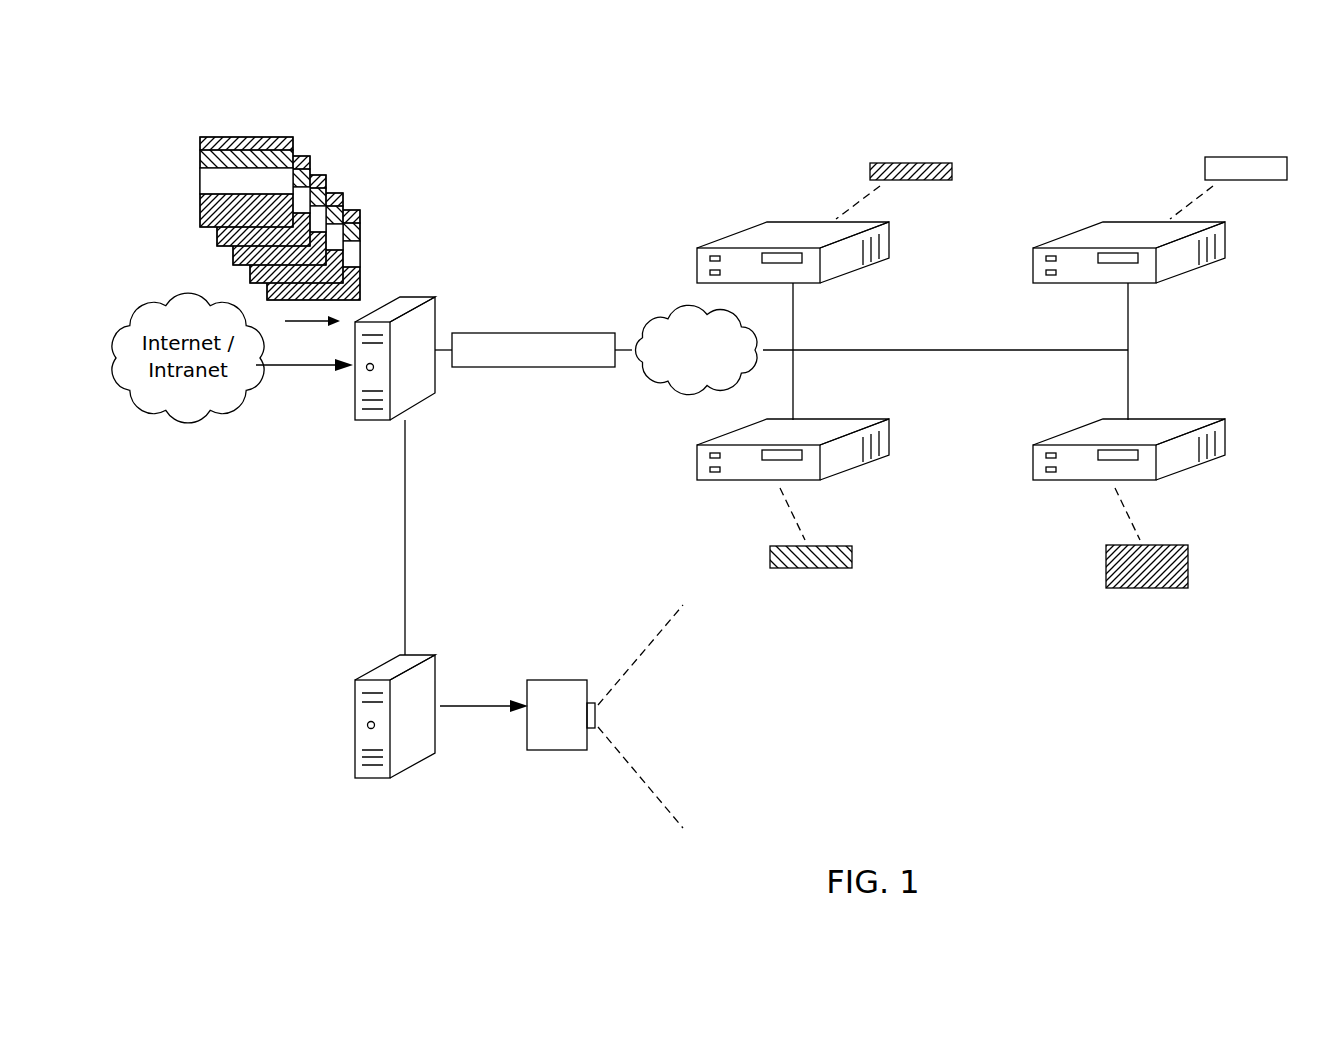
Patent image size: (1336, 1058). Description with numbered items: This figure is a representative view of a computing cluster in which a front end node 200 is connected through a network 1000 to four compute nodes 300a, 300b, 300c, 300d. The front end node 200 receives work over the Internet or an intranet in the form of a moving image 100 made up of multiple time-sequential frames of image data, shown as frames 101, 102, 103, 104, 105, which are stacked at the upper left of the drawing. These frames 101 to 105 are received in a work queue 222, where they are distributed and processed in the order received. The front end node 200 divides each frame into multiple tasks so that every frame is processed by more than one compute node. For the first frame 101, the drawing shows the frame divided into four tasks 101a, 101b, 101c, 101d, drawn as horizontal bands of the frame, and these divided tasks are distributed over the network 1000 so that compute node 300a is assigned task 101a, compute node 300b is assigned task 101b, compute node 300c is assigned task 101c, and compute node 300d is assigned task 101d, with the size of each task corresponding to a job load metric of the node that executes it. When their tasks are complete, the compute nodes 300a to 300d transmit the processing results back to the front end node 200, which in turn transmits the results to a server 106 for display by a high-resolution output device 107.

The moving image 100 is at (205, 108).
The frame 101 is at (247, 137).
The frame 102 is at (300, 156).
The frame 103 is at (327, 176).
The frame 104 is at (343, 195).
The frame 105 is at (360, 212).
The task 101a is at (200, 140).
The task 101b is at (200, 158).
The task 101c is at (200, 176).
The task 101d is at (200, 205).
The front end node 200 is at (418, 394).
The work queue 222 is at (533, 333).
The network 1000 is at (645, 380).
The compute node 300a is at (888, 247).
The compute node 300b is at (888, 444).
The compute node 300c is at (1224, 247).
The compute node 300d is at (1224, 444).
The server 106 is at (413, 750).
The high-resolution output device 107 is at (551, 745).